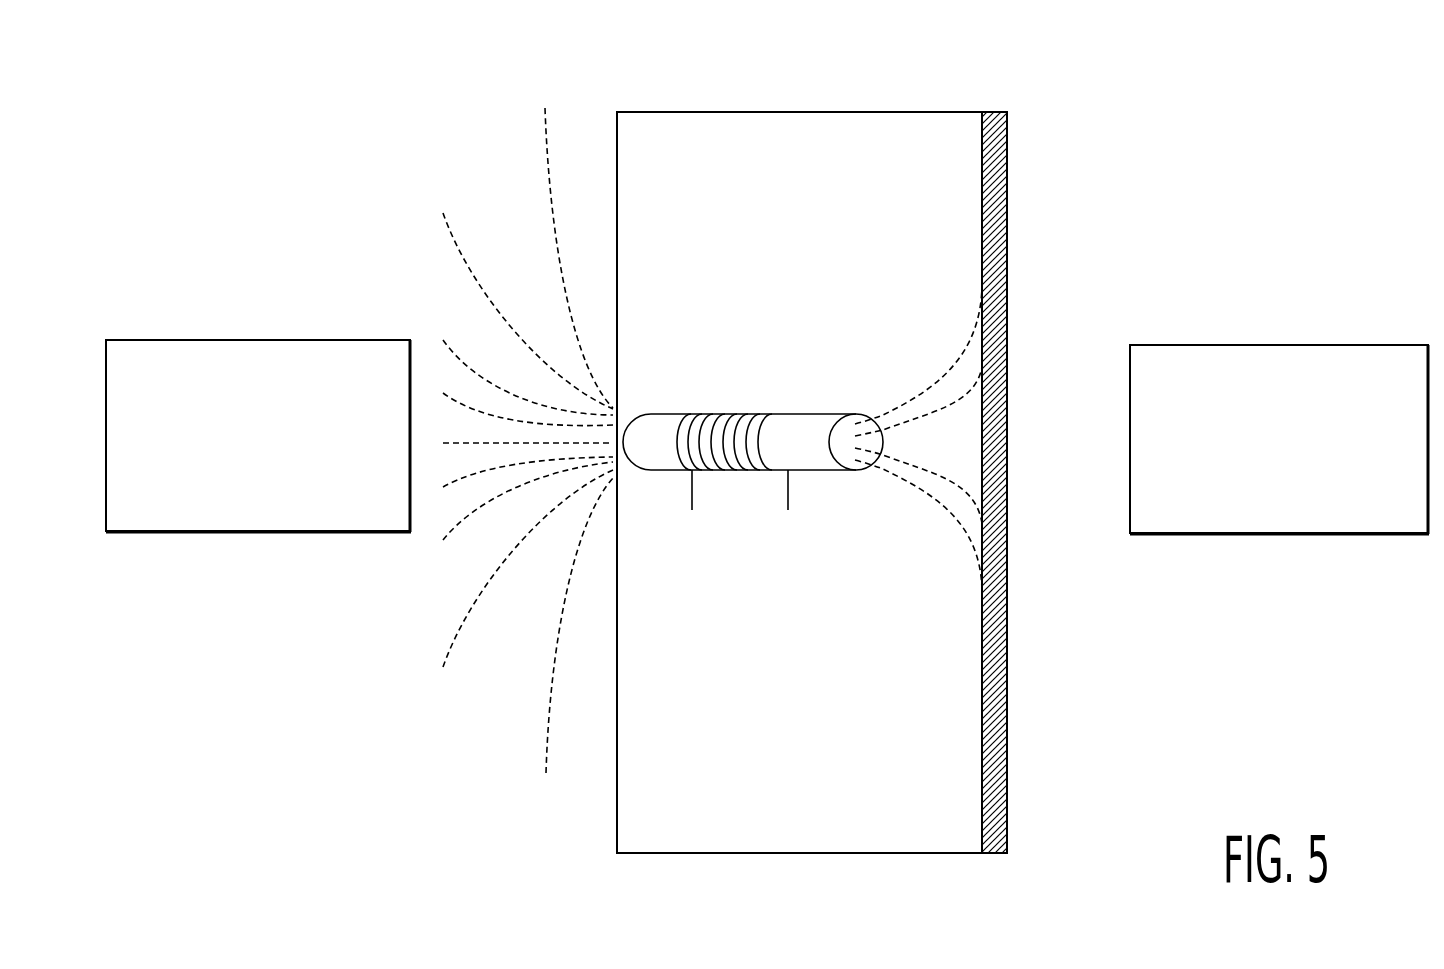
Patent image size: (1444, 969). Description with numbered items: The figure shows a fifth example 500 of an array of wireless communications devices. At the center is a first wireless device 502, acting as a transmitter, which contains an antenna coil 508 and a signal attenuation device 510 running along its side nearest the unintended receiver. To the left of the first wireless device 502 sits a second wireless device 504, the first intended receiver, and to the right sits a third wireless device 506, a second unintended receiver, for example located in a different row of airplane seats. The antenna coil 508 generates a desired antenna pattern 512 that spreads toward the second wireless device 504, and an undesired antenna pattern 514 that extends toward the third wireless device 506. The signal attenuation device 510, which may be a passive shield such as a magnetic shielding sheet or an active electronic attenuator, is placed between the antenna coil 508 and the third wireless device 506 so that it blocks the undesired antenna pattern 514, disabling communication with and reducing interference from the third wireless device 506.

The fifth example of an array of wireless communications devices 500 is at (214, 132).
The first wireless device 502 is at (804, 112).
The second wireless device 504 is at (254, 340).
The third wireless device 506 is at (1292, 345).
The antenna coil 508 is at (813, 414).
The signal attenuation device 510 is at (1008, 135).
The desired antenna pattern 512 is at (455, 246).
The undesired antenna pattern 514 is at (940, 383).